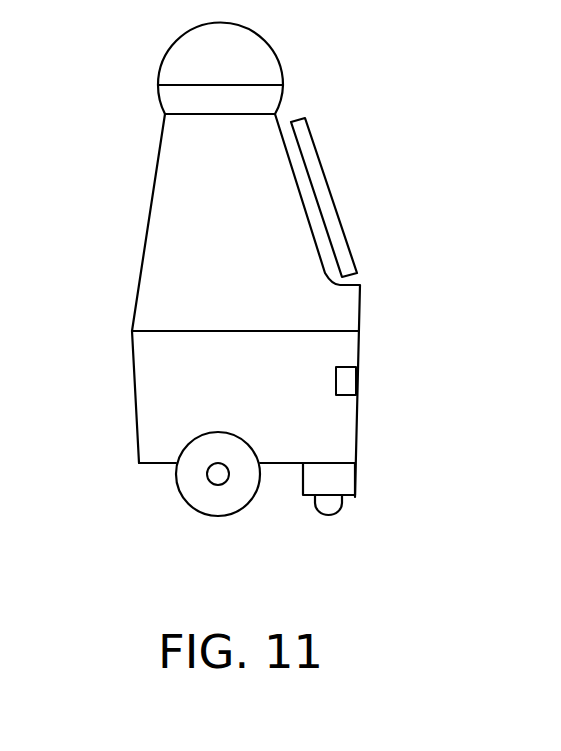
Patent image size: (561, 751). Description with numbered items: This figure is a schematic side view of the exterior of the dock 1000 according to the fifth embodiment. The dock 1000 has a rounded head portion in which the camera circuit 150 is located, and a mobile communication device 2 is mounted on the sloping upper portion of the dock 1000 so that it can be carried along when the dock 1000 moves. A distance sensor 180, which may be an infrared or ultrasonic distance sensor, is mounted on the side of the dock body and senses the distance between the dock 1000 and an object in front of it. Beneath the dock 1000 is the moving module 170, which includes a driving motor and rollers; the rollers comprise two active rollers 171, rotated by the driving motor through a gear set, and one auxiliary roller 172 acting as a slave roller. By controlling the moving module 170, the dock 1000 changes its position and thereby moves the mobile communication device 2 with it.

The dock 1000 is at (257, 315).
The camera circuit 150 is at (253, 67).
The mobile communication device 2 is at (328, 182).
The distance sensor 180 is at (350, 380).
The moving module 170 is at (265, 524).
The active rollers 171 is at (230, 515).
The auxiliary roller 172 is at (329, 518).